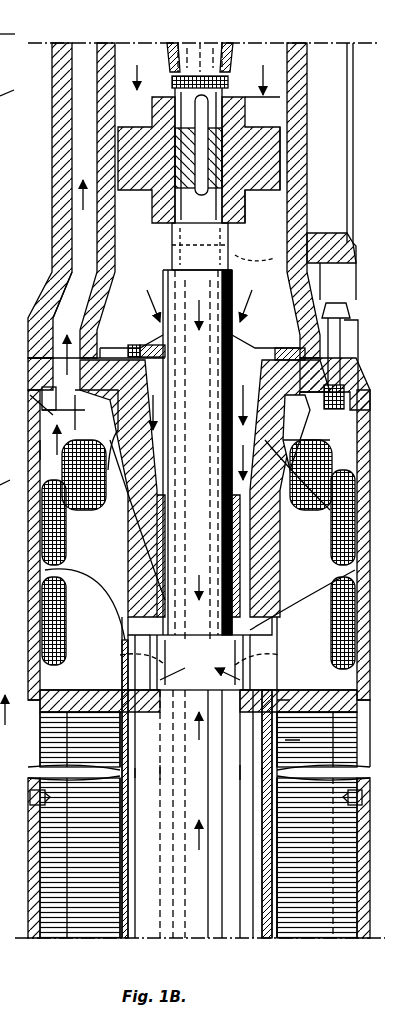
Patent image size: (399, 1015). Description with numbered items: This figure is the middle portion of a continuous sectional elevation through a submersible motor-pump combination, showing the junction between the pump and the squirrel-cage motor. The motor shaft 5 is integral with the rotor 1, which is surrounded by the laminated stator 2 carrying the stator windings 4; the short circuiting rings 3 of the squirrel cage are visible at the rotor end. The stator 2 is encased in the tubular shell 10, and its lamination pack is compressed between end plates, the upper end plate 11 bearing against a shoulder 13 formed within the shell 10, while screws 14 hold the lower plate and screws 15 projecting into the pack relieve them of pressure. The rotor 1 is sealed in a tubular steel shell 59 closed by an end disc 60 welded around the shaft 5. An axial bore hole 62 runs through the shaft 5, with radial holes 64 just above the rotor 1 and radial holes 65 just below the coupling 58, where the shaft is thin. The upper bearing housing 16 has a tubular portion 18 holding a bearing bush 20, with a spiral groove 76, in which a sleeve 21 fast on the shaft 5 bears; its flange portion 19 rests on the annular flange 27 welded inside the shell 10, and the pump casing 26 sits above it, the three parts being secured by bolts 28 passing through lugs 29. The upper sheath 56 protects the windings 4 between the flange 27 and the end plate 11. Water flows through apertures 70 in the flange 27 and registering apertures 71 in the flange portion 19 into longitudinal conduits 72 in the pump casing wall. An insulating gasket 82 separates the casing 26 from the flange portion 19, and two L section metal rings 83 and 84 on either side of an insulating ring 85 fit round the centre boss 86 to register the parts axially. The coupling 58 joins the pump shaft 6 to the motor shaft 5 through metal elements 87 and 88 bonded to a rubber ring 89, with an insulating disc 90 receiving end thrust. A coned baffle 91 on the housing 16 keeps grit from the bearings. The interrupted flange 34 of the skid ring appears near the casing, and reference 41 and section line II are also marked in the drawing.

The rotor 1 is at (225, 930).
The stator 2 is at (313, 905).
The short circuiting rings 3 is at (268, 725).
The stator windings 4 is at (358, 640).
The motor shaft 5 is at (230, 300).
The pump shaft 6 is at (195, 42).
The tubular shell 10 is at (352, 856).
The upper end plate 11 is at (360, 676).
The shoulder 13 is at (45, 672).
The screws 14 is at (52, 62).
The screws 15 is at (30, 797).
The upper bearing housing 16 is at (158, 380).
The tubular portion 18 is at (290, 443).
The flange portion 19 is at (290, 488).
The bearing bush 20 is at (243, 572).
The sleeve 21 is at (160, 570).
The pump casing 26 is at (57, 75).
The annular flange 27 is at (345, 402).
The bolts 28 is at (340, 296).
The lugs 29 is at (350, 324).
The interrupted flange 34 is at (20, 545).
The channel 41 is at (20, 445).
The upper sheath 56 is at (330, 520).
The coupling 58 is at (268, 248).
The tubular steel shell 59 is at (124, 930).
The end disc 60 is at (255, 680).
The axial bore hole 62 is at (183, 935).
The radial holes 64 is at (120, 657).
The radial holes 65 is at (172, 244).
The apertures 70 is at (42, 412).
The apertures 71 is at (42, 392).
The longitudinal conduits 72 is at (72, 270).
The spiral groove 76 is at (160, 530).
The insulating gasket 82 is at (318, 355).
The L section metal ring 83 is at (150, 345).
The L section metal ring 84 is at (85, 395).
The insulating ring 85 is at (138, 345).
The centre boss 86 is at (155, 347).
The metal element 87 is at (270, 140).
The metal element 88 is at (245, 185).
The rubber ring 89 is at (262, 157).
The insulating disc 90 is at (199, 160).
The coned baffle 91 is at (240, 340).
The section line II is at (4, 699).